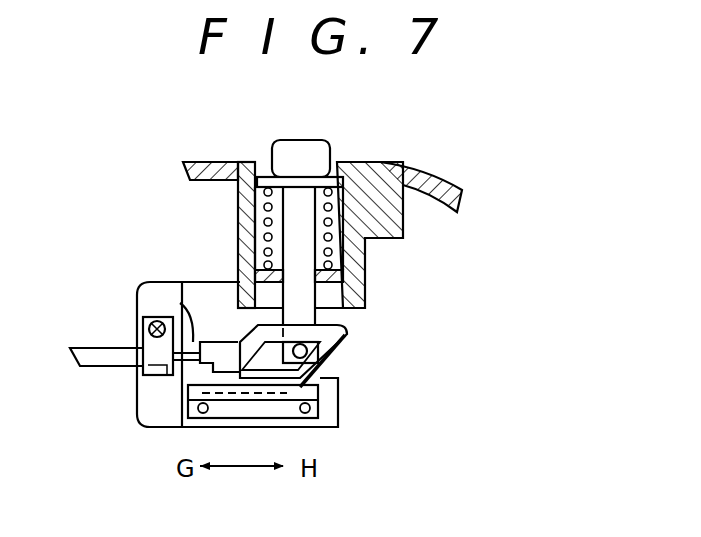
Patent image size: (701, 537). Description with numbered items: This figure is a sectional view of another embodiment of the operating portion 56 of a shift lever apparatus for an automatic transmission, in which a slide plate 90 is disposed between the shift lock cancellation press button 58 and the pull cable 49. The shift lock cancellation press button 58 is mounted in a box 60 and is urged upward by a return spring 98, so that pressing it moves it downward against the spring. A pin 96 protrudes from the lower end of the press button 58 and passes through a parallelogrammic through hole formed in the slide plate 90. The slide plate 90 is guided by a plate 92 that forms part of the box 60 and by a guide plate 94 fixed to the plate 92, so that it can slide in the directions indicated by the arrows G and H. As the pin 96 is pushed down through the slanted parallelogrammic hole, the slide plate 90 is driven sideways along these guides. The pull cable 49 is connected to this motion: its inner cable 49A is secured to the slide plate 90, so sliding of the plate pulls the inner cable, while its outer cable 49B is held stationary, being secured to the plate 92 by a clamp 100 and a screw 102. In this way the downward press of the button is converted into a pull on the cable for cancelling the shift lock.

The pull cable 49 is at (91, 347).
The inner cable 49A is at (180, 303).
The outer cable 49B is at (110, 366).
The operating portion 56 is at (474, 266).
The shift lock cancellation press button 58 is at (330, 141).
The box 60 is at (240, 205).
The slide plate 90 is at (352, 334).
The plate 92 is at (204, 281).
The guide plate 94 is at (320, 407).
The pin 96 is at (308, 352).
The return spring 98 is at (337, 247).
The clamp 100 is at (240, 376).
The screw 102 is at (137, 300).